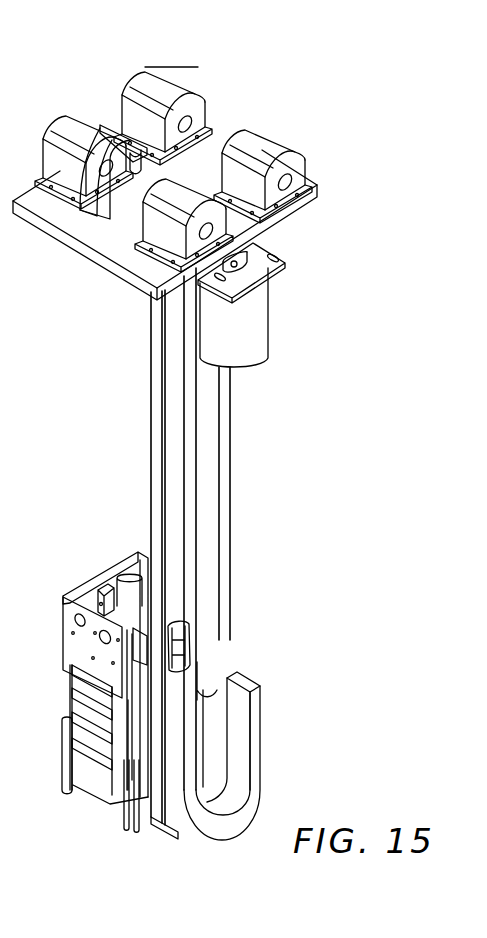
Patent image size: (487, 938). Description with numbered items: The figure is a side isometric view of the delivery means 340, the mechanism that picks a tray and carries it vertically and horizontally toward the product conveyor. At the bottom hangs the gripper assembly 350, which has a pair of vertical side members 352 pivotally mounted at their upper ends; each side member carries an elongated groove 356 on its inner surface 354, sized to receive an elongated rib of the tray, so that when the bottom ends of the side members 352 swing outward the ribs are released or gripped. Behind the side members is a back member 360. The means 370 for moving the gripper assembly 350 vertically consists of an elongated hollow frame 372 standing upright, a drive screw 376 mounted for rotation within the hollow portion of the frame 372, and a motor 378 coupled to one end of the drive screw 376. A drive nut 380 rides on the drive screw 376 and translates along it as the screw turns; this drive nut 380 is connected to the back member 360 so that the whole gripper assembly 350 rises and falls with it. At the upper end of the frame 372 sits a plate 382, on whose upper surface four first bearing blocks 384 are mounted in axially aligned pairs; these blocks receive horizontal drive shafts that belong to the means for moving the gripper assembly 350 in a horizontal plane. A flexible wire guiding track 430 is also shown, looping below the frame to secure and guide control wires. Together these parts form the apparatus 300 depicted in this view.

The apparatus 300 is at (216, 69).
The delivery means 340 is at (406, 149).
The gripper assembly 350 is at (78, 553).
The vertical side members 352 is at (72, 700).
The inner surface 354 is at (69, 817).
The elongated grooves 356 is at (67, 766).
The back member 360 is at (123, 662).
The means for moving the gripper assembly in a vertical direction 370 is at (242, 499).
The elongated hollow frame 372 is at (228, 438).
The drive screw 376 is at (188, 640).
The motor 378 is at (272, 332).
The drive nut 380 is at (303, 226).
The plate 382 is at (116, 273).
The first bearing blocks 384 is at (143, 78).
The flexible wire guiding track 430 is at (262, 738).